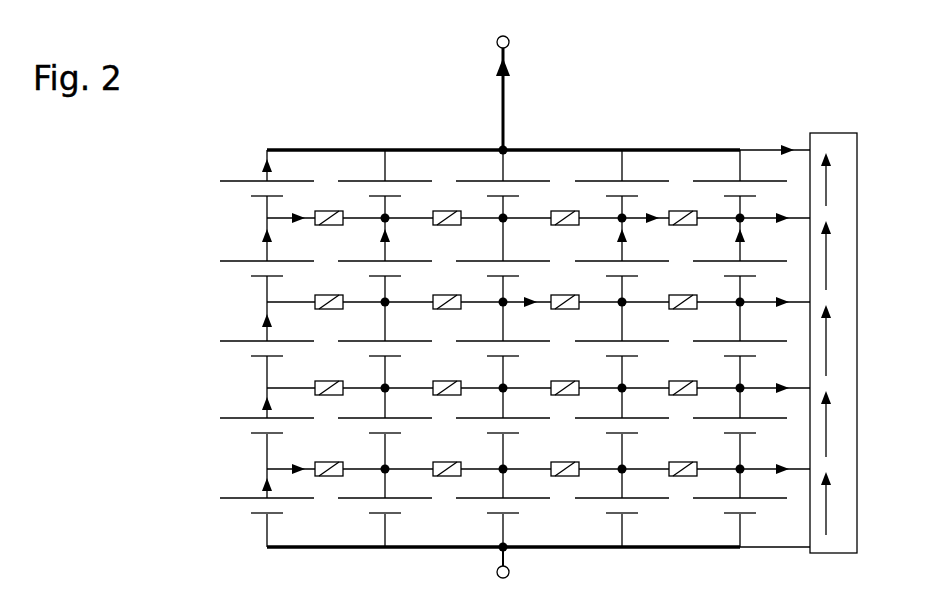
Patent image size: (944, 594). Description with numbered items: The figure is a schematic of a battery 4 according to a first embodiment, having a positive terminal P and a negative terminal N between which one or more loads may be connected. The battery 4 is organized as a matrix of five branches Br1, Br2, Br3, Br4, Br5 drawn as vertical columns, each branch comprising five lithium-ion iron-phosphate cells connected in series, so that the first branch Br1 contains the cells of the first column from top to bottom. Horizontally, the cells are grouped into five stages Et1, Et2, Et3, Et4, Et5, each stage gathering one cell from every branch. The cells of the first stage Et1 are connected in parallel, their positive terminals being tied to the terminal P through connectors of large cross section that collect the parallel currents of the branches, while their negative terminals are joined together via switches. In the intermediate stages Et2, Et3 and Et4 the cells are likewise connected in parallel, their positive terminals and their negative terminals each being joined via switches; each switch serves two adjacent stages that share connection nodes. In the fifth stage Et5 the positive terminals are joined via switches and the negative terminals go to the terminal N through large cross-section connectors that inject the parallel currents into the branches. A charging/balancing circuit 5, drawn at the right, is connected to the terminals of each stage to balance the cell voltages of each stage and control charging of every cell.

The battery 4 is at (564, 97).
The charging/balancing circuit 5 is at (833, 132).
The positive terminal P is at (509, 94).
The negative terminal N is at (518, 564).
The first branch Br1 is at (267, 321).
The second branch Br2 is at (385, 321).
The third branch Br3 is at (503, 321).
The fourth branch Br4 is at (622, 321).
The fifth branch Br5 is at (740, 321).
The first stage Et1 is at (473, 188).
The second stage Et2 is at (473, 269).
The third stage Et3 is at (473, 354).
The fourth stage Et4 is at (473, 434).
The fifth stage Et5 is at (470, 507).